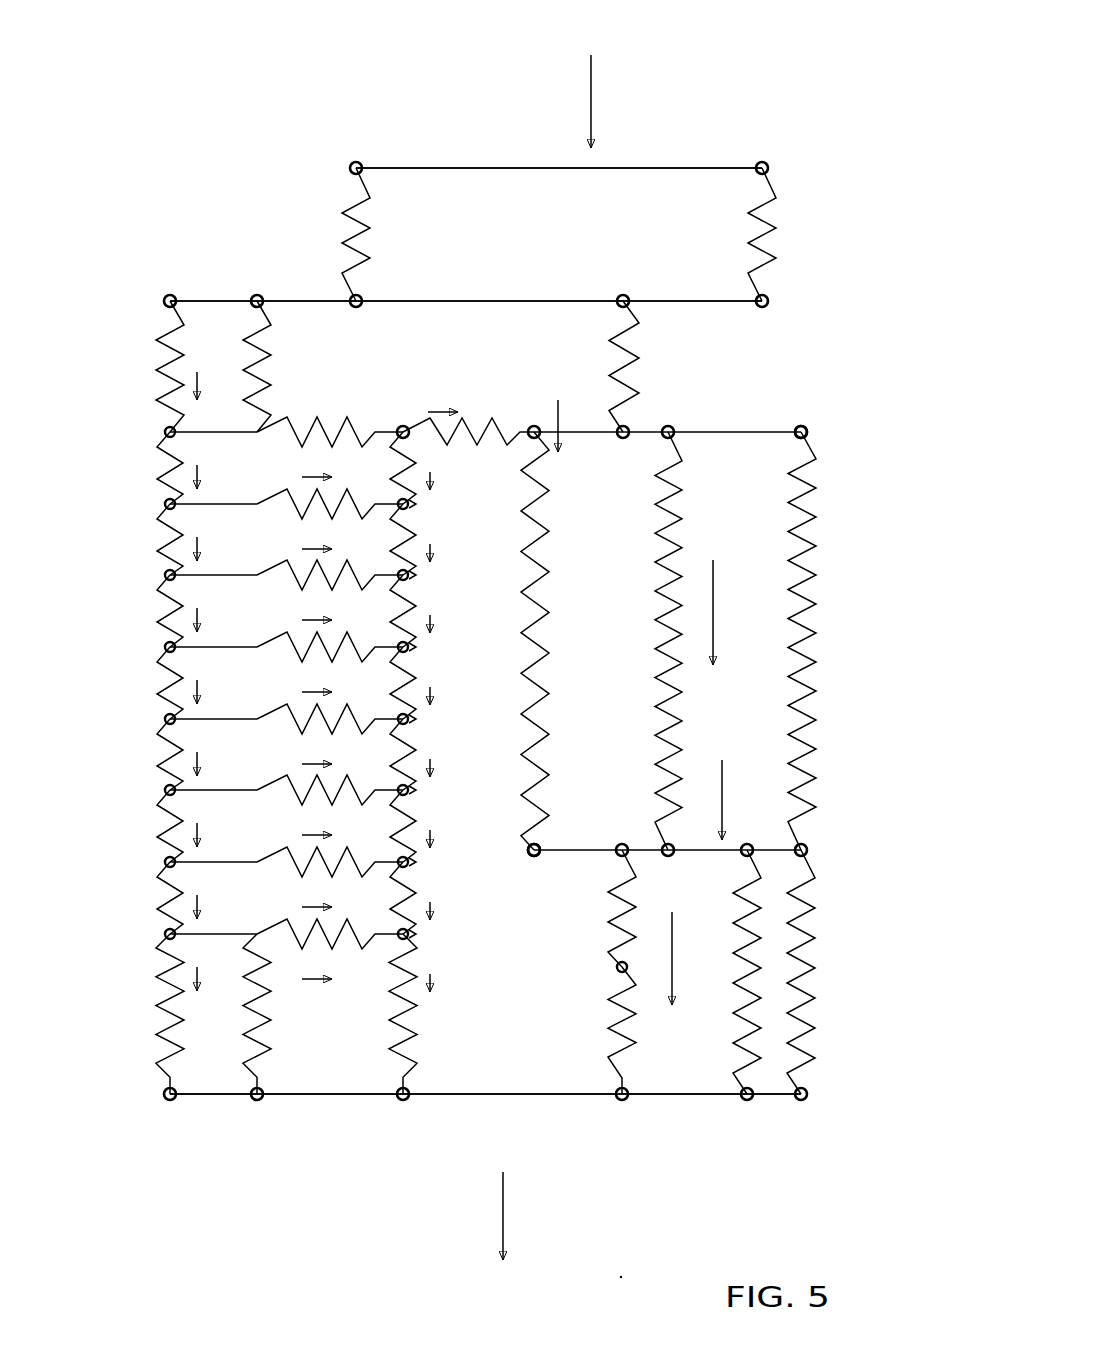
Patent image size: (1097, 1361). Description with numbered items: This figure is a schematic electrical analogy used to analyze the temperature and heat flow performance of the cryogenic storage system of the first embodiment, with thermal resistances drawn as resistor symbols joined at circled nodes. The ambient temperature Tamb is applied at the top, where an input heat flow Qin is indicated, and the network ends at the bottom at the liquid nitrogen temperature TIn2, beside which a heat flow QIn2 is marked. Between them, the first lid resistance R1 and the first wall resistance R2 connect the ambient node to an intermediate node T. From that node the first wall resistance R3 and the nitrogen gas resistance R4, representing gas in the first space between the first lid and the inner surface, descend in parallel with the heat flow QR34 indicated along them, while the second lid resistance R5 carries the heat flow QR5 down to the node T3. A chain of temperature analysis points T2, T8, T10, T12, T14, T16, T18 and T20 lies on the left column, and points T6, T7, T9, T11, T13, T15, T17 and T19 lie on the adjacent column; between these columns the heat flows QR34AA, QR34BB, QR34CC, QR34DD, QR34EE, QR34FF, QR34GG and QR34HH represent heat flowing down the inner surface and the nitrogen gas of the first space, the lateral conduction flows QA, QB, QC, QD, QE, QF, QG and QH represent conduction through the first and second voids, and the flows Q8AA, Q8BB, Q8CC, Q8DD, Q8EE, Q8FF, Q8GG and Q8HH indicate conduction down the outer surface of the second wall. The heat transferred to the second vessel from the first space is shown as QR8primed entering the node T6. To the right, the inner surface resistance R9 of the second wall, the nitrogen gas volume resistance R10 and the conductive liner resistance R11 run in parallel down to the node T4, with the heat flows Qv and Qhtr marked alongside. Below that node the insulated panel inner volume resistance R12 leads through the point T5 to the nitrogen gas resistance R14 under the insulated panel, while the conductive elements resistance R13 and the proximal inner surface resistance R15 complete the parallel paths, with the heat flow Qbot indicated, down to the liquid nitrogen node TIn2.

The input heat flow Qin is at (592, 82).
The ambient temperature Tamb is at (604, 157).
The first lid thermal resistance R1 is at (388, 234).
The first wall thermal resistance R2 is at (727, 234).
The temperature node T is at (455, 297).
The first wall thermal resistance R3 is at (138, 697).
The first space nitrogen gas resistance R4 is at (282, 697).
The second lid thermal resistance R5 is at (657, 366).
The heat flow through R3/R4 QR34 is at (228, 369).
The heat flow through R5 QR5 is at (569, 385).
The temperature analysis point T3 is at (710, 426).
The temperature analysis point T6 is at (387, 415).
The heat transferred to second vessel QR8primed is at (493, 411).
The temperature analysis point T2 is at (158, 438).
The temperature analysis point T8 is at (158, 510).
The temperature analysis point T10 is at (158, 581).
The temperature analysis point T12 is at (158, 653).
The temperature analysis point T14 is at (158, 725).
The temperature analysis point T16 is at (158, 796).
The temperature analysis point T18 is at (158, 868).
The temperature analysis point T20 is at (158, 940).
The temperature analysis point T7 is at (427, 505).
The temperature analysis point T9 is at (436, 576).
The temperature analysis point T11 is at (436, 648).
The temperature analysis point T13 is at (436, 720).
The temperature analysis point T15 is at (436, 791).
The temperature analysis point T17 is at (436, 863).
The temperature analysis point T19 is at (436, 935).
The inner surface heat flow QR34AA is at (230, 468).
The inner surface heat flow QR34BB is at (230, 539).
The inner surface heat flow QR34CC is at (230, 611).
The inner surface heat flow QR34DD is at (232, 683).
The inner surface heat flow QR34EE is at (229, 754).
The inner surface heat flow QR34FF is at (227, 826).
The inner surface heat flow QR34GG is at (233, 898).
The inner surface heat flow QR34HH is at (247, 962).
The lateral conduction heat flow QA is at (330, 447).
The lateral conduction heat flow QB is at (330, 519).
The lateral conduction heat flow QC is at (330, 590).
The lateral conduction heat flow QD is at (330, 662).
The lateral conduction heat flow QE is at (330, 734).
The lateral conduction heat flow QF is at (330, 805).
The lateral conduction heat flow QG is at (330, 877).
The lateral conduction heat flow QH is at (330, 949).
The outer surface conduction heat flow Q8AA is at (447, 468).
The outer surface conduction heat flow Q8BB is at (446, 539).
The outer surface conduction heat flow Q8CC is at (447, 611).
The outer surface conduction heat flow Q8DD is at (449, 683).
The outer surface conduction heat flow Q8EE is at (445, 754).
The outer surface conduction heat flow Q8FF is at (443, 826).
The outer surface conduction heat flow Q8GG is at (449, 898).
The outer surface conduction heat flow Q8HH is at (448, 1014).
The second wall inner surface resistance R9 is at (556, 641).
The first space nitrogen gas volume resistance R10 is at (633, 641).
The conductive liner resistance R11 is at (773, 641).
The heat flow Qv is at (711, 596).
The heater heat flow Qhtr is at (731, 774).
The temperature analysis point T4 is at (563, 842).
The insulated panel inner volume resistance R12 is at (582, 908).
The temperature analysis point T5 is at (630, 965).
The insulated panel nitrogen gas resistance R14 is at (582, 1030).
The conductive elements resistance R13 is at (708, 972).
The proximal inner surface resistance R15 is at (832, 972).
The bottom heat flow Qbot is at (682, 938).
The heat flow QIn2 is at (491, 1189).
The liquid nitrogen temperature TIn2 is at (575, 1102).